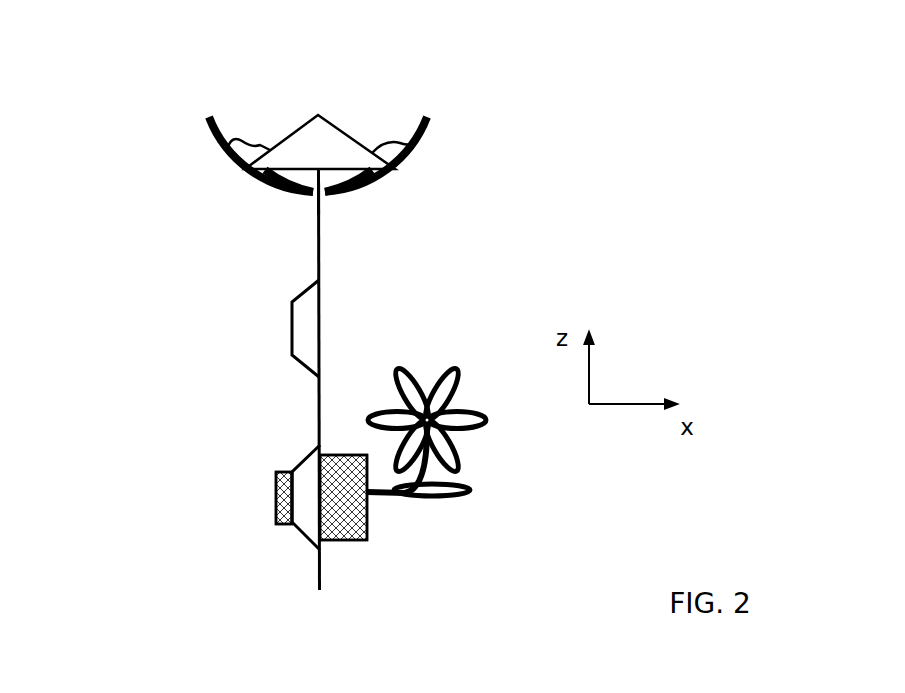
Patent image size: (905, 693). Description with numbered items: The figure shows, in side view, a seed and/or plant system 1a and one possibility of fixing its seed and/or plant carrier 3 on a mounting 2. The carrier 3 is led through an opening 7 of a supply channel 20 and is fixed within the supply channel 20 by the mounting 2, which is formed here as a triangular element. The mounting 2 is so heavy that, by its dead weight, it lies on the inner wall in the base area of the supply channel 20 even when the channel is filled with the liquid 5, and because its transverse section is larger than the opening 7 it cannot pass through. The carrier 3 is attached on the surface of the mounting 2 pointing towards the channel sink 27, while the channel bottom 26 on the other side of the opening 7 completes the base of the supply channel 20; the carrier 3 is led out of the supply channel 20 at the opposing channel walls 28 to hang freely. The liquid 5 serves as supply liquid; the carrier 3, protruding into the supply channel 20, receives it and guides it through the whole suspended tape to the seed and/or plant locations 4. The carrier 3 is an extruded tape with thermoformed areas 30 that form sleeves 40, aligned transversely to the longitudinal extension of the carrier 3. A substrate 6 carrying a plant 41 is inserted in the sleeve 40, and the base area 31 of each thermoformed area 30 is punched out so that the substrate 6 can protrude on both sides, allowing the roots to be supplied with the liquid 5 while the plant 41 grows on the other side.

The seed and/or plant system 1a is at (657, 102).
The mounting 2 is at (323, 155).
The seed and/or plant carrier 3 is at (322, 240).
The seed and/or plant location 4 is at (375, 527).
The liquid 5 is at (238, 153).
The substrate 6 is at (340, 533).
The opening 7 is at (316, 202).
The supply channel 20 is at (430, 120).
The bowl bottom right 26 is at (350, 195).
The channel sink 27 is at (285, 183).
The channel wall 28 is at (428, 128).
The thermoformed area 30 is at (313, 480).
The base area 31 is at (290, 488).
The sleeve 40 is at (307, 508).
The plant 41 is at (457, 430).